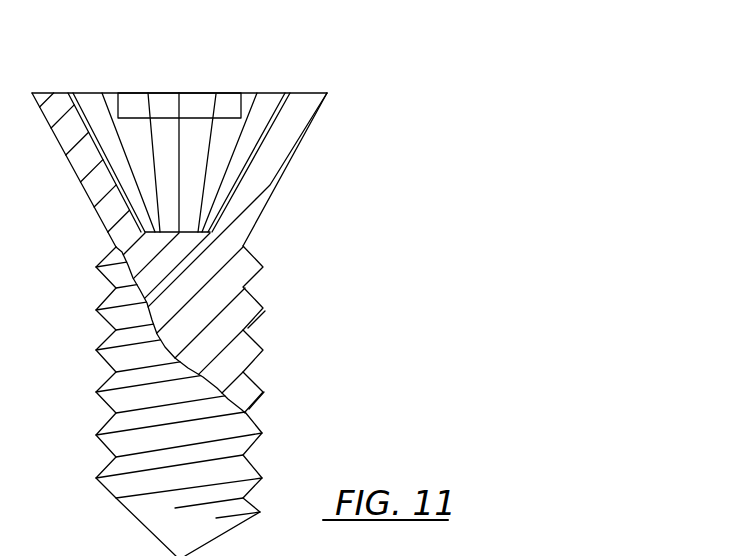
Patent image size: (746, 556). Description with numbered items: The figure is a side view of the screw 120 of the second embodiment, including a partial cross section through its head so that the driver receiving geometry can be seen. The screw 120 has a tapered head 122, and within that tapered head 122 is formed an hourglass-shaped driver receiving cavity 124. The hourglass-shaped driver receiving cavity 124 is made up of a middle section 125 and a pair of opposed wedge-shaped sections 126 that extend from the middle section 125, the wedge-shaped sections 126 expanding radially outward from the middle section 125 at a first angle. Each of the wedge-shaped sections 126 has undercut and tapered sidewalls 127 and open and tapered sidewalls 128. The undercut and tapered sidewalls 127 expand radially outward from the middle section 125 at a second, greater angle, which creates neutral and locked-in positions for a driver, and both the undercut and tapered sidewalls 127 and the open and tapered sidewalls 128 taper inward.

The screw 120 is at (243, 292).
The tapered head 122 is at (265, 165).
The hourglass-shaped driver receiving cavity 124 is at (160, 163).
The middle section 125 is at (162, 92).
The opposed wedge-shaped sections 126 is at (203, 92).
The undercut and tapered sidewalls 127 is at (190, 203).
The open and tapered sidewalls 128 is at (238, 130).